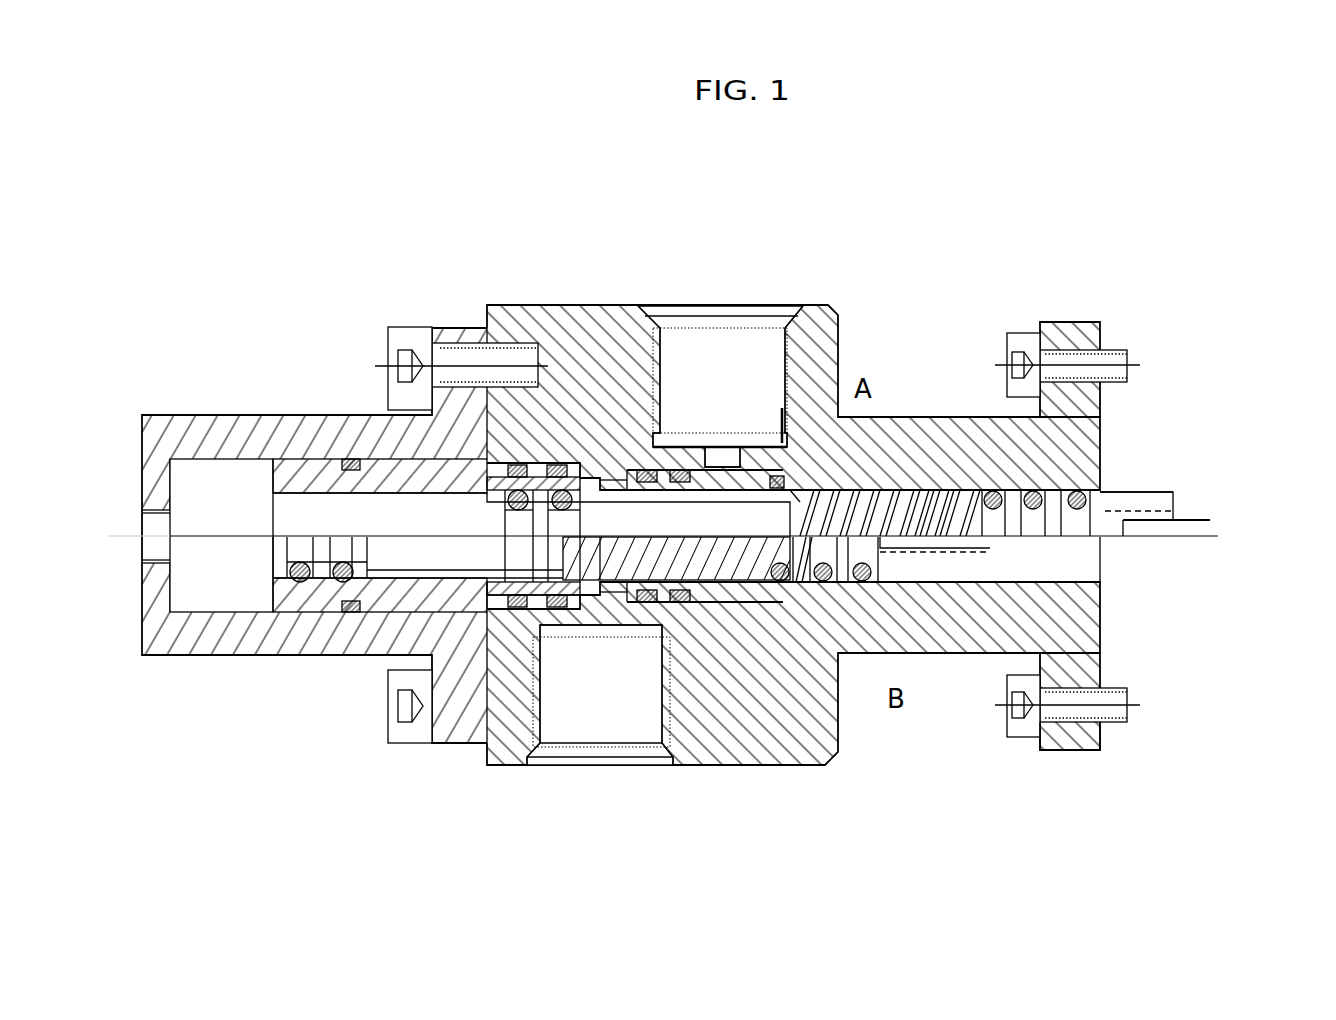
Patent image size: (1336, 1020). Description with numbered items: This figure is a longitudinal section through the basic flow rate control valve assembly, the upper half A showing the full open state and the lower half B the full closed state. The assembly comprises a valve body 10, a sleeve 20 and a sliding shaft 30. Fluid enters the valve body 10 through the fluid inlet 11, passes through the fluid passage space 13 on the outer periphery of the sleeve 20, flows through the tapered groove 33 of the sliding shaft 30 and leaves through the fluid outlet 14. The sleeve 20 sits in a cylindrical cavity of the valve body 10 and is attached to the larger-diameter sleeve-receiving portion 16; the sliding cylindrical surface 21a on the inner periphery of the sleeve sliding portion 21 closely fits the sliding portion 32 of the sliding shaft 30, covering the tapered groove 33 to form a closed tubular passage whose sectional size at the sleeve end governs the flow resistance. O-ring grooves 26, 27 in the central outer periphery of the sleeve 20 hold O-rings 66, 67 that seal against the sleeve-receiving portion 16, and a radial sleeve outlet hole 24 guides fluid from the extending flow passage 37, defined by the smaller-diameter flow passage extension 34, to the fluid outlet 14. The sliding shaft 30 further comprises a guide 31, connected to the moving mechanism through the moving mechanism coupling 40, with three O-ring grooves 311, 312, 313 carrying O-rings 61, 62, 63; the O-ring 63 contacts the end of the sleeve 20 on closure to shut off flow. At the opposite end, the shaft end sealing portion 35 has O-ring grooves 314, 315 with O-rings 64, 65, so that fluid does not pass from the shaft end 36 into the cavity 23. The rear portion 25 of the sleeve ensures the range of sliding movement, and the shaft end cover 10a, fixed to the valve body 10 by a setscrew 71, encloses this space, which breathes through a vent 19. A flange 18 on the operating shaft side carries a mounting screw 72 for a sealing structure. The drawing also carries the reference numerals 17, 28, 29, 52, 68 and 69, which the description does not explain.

The valve body 10 is at (592, 305).
The shaft end cover 10a is at (244, 417).
The fluid inlet 11 is at (752, 318).
The fluid passage space 13 is at (848, 413).
The fluid outlet 14 is at (585, 768).
The sleeve-receiving portion 16 is at (790, 500).
The lower right housing 17 is at (1099, 617).
The flange 18 is at (1098, 752).
The vent 19 is at (157, 500).
The sleeve 20 is at (445, 490).
The sleeve sliding portion 21 is at (760, 575).
The sliding cylindrical surface 21a is at (745, 604).
The cavity 23 is at (200, 492).
The sleeve outlet hole 24 is at (604, 590).
The rear portion of the sleeve 25 is at (396, 472).
The O-ring groove 26 is at (682, 604).
The O-ring groove 27 is at (642, 604).
The gland step 28 is at (515, 690).
The gland shoulder 29 is at (470, 700).
The sliding shaft 30 is at (907, 503).
The guide 31 is at (1148, 497).
The O-ring groove 311 is at (1099, 537).
The O-ring groove 312 is at (1099, 553).
The O-ring groove 313 is at (1099, 575).
The O-ring groove 314 is at (343, 553).
The O-ring groove 315 is at (297, 553).
The sliding portion 32 is at (940, 507).
The tapered groove 33 is at (917, 498).
The flow passage extension 34 is at (628, 520).
The shaft end sealing portion 35 is at (321, 553).
The shaft end 36 is at (275, 551).
The extending flow passage 37 is at (753, 473).
The moving mechanism coupling 40 is at (1183, 530).
The seal 52 is at (349, 460).
The O-ring 61 is at (1150, 497).
The O-ring 62 is at (1052, 482).
The O-ring 63 is at (1015, 490).
The O-ring 64 is at (560, 494).
The O-ring 65 is at (517, 495).
The O-ring 66 is at (712, 468).
The O-ring 67 is at (686, 468).
The seal 68 is at (573, 480).
The seal 69 is at (545, 476).
The setscrew 71 is at (450, 372).
The mounting screw 72 is at (1025, 737).